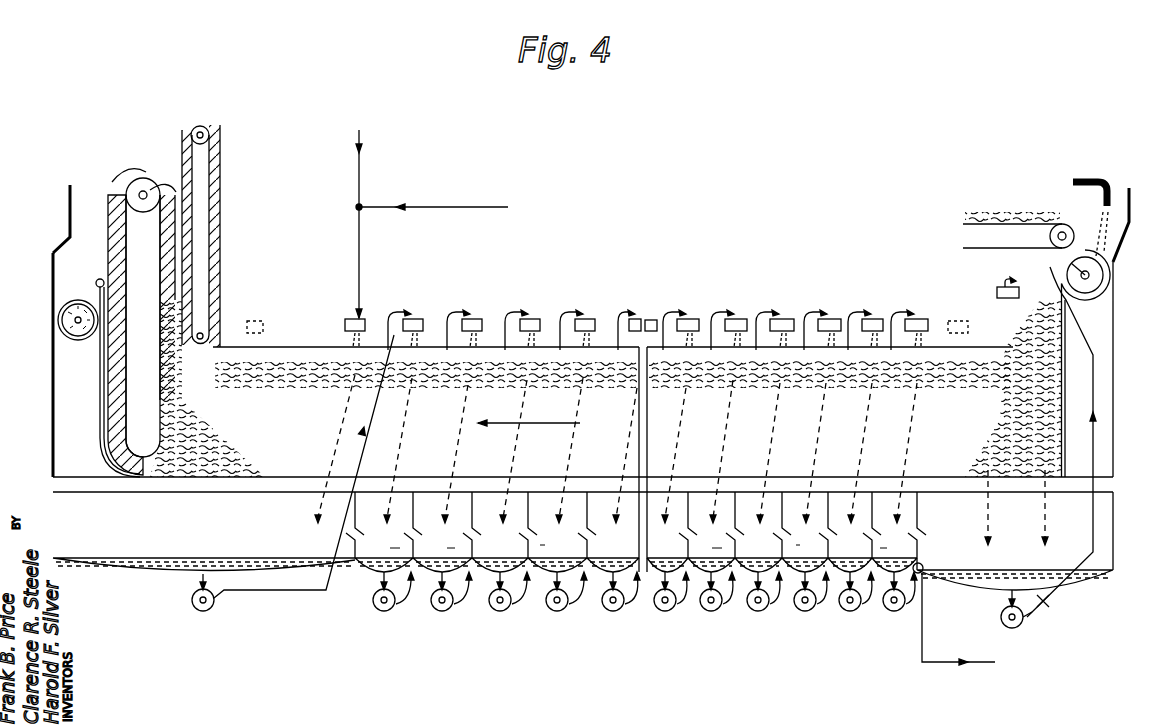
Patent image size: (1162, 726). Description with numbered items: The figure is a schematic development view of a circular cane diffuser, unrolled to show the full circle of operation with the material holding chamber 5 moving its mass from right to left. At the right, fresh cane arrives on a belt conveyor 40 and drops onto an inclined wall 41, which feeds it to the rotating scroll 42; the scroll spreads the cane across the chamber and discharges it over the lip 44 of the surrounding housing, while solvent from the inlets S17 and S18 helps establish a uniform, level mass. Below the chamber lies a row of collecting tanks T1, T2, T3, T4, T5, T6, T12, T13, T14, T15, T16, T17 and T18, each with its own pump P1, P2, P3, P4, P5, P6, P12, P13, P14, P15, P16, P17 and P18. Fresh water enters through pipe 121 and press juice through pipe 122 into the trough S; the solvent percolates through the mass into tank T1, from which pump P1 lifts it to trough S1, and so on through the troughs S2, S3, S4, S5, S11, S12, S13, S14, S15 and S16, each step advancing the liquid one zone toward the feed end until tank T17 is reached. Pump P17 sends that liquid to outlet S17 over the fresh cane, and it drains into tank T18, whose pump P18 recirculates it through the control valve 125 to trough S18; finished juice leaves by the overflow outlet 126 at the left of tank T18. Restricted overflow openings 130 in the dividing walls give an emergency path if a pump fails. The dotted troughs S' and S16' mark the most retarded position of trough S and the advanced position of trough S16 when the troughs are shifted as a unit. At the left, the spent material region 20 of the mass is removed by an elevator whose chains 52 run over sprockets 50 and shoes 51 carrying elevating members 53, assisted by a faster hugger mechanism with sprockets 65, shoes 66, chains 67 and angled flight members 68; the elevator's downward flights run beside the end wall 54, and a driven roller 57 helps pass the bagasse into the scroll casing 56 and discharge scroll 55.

The inclined wall 41 is at (62, 241).
The scroll 42 is at (1114, 291).
The lip 44 is at (1060, 437).
The conveyor 40 is at (997, 222).
The solvent inlet S17 is at (1089, 180).
The solvent inlet S18 is at (1000, 281).
The material holding chamber 5 is at (998, 388).
The end wall 54 is at (106, 372).
The sprockets 50 is at (140, 180).
The shoes 51 is at (146, 470).
The elevating members 53 is at (171, 190).
The material pile 20 is at (215, 388).
The chains 52 is at (103, 391).
The driven roller 57 is at (96, 283).
The scroll 55 is at (70, 307).
The scroll casing 56 is at (59, 334).
The sprockets 65 is at (211, 128).
The flight members 68 is at (219, 206).
The chains 67 is at (222, 174).
The shoes 66 is at (209, 333).
The trough position S' is at (265, 315).
The pipe 121 is at (363, 170).
The pipe 122 is at (455, 206).
The trough S is at (347, 321).
The trough S1 is at (405, 322).
The trough S2 is at (464, 322).
The solvent outlet S3 is at (522, 322).
The solvent outlet S4 is at (577, 322).
The solvent outlet S5 is at (637, 322).
The solvent outlet S11 is at (681, 322).
The solvent outlet S12 is at (729, 322).
The solvent outlet S13 is at (775, 322).
The solvent outlet S14 is at (822, 322).
The solvent outlet S15 is at (866, 322).
The trough S16 is at (909, 322).
The trough position S16' is at (958, 313).
The tank T1 is at (221, 537).
The tank T2 is at (379, 475).
The collecting tank T3 is at (438, 478).
The collecting tank T4 is at (495, 476).
The collecting tank T5 is at (553, 475).
The collecting tank T6 is at (608, 480).
The collecting tank T12 is at (667, 480).
The collecting tank T13 is at (707, 476).
The collecting tank T14 is at (754, 477).
The collecting tank T15 is at (800, 477).
The collecting tank T16 is at (845, 477).
The tank T17 is at (890, 477).
The tank T18 is at (1010, 530).
The overflow openings 130 is at (641, 543).
The pump P1 is at (291, 485).
The pump P2 is at (391, 603).
The pump P3 is at (449, 603).
The pump P4 is at (507, 603).
The pump P5 is at (564, 603).
The pump P6 is at (619, 603).
The pump P12 is at (668, 603).
The pump P13 is at (716, 603).
The pump P14 is at (763, 603).
The pump P15 is at (809, 603).
The pump P16 is at (855, 603).
The pump P17 is at (898, 603).
The pump P18 is at (1014, 620).
The control valve 125 is at (1054, 605).
The overflow outlet 126 is at (924, 566).